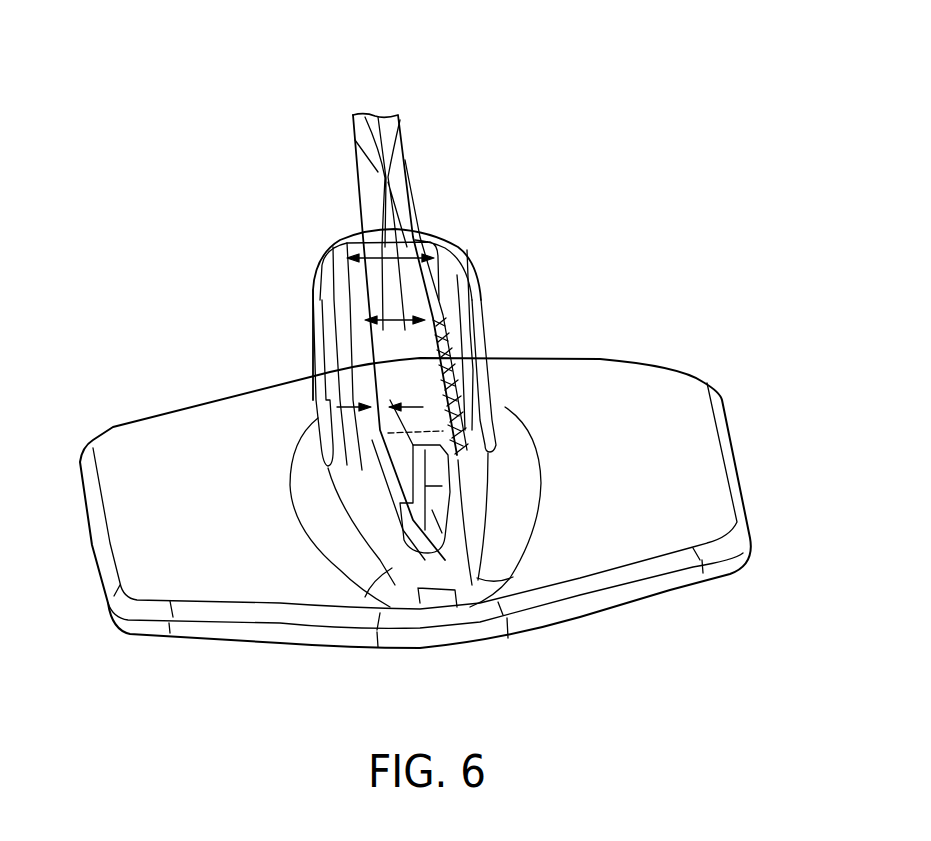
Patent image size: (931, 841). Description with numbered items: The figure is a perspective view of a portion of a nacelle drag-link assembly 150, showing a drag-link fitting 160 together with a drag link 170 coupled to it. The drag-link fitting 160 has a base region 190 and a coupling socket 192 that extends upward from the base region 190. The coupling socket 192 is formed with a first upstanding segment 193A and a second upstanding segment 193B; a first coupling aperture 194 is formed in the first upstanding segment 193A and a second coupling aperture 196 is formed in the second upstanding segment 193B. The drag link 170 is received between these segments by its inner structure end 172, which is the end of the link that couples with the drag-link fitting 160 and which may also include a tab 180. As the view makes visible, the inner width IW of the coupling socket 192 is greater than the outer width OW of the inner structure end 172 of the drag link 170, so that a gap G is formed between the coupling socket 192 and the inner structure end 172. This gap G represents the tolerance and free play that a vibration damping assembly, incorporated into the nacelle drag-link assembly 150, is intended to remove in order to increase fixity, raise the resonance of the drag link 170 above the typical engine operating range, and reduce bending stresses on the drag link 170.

The nacelle drag-link assembly 150 is at (112, 95).
The drag-link fitting 160 is at (110, 450).
The drag link 170 is at (360, 127).
The inner structure end 172 is at (428, 423).
The tab 180 is at (445, 560).
The base region 190 is at (130, 537).
The coupling socket 192 is at (337, 300).
The first upstanding segment 193A is at (350, 337).
The second upstanding segment 193B is at (453, 297).
The first coupling aperture 194 is at (317, 387).
The second coupling aperture 196 is at (492, 390).
The inner width IW is at (393, 253).
The outer width OW is at (397, 316).
The gap G is at (413, 397).